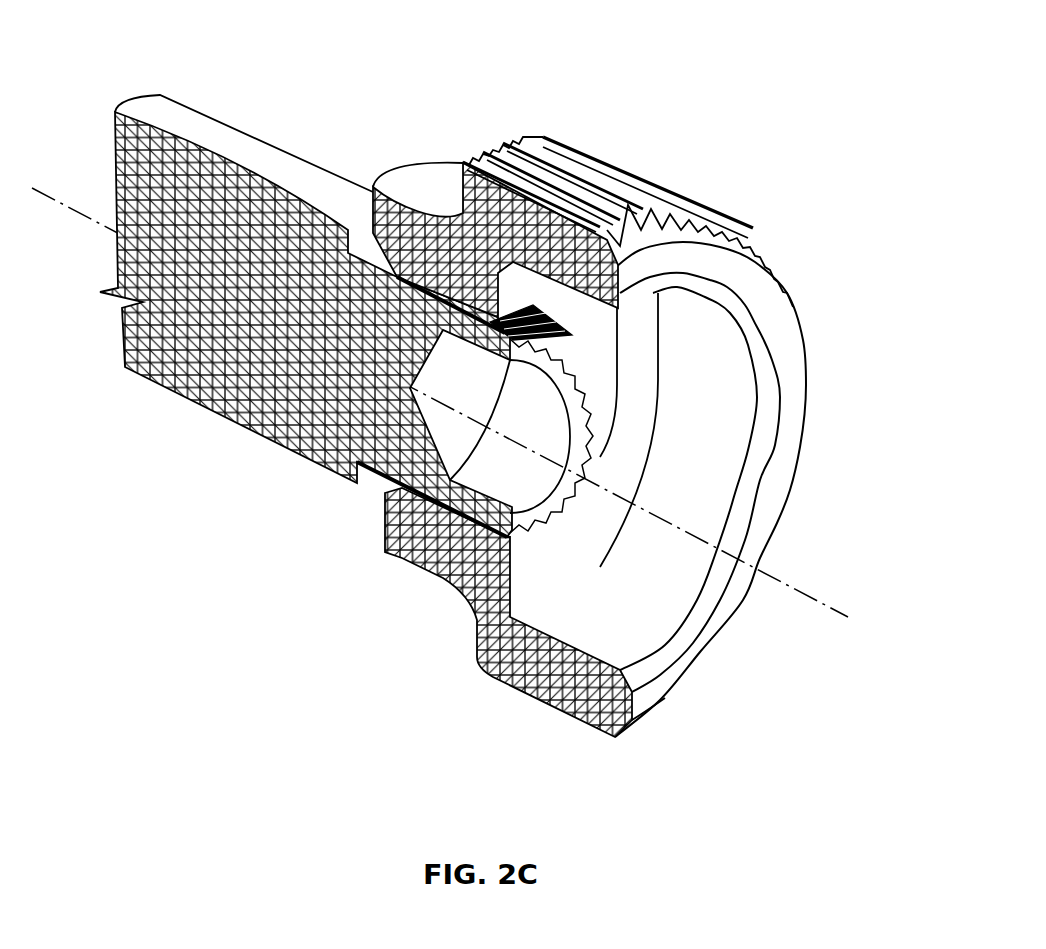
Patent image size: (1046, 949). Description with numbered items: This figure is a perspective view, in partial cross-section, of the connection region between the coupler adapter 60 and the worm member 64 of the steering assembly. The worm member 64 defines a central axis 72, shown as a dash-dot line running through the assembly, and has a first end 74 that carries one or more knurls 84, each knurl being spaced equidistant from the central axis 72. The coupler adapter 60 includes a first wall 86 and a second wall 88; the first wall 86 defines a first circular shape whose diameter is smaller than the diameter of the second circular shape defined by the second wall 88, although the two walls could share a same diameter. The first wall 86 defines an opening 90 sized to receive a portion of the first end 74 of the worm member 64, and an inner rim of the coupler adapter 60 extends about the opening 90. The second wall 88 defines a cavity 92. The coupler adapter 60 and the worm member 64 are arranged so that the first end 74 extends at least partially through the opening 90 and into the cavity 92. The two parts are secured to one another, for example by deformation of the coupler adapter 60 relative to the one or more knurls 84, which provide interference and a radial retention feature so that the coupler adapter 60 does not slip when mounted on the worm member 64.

The coupler adapter 60 is at (533, 130).
The worm member 64 is at (173, 106).
The central axis 72 is at (50, 197).
The first end 74 is at (477, 527).
The one or more knurls 84 is at (580, 177).
The first wall 86 is at (400, 173).
The second wall 88 is at (538, 302).
The opening 90 is at (510, 540).
The cavity 92 is at (728, 365).